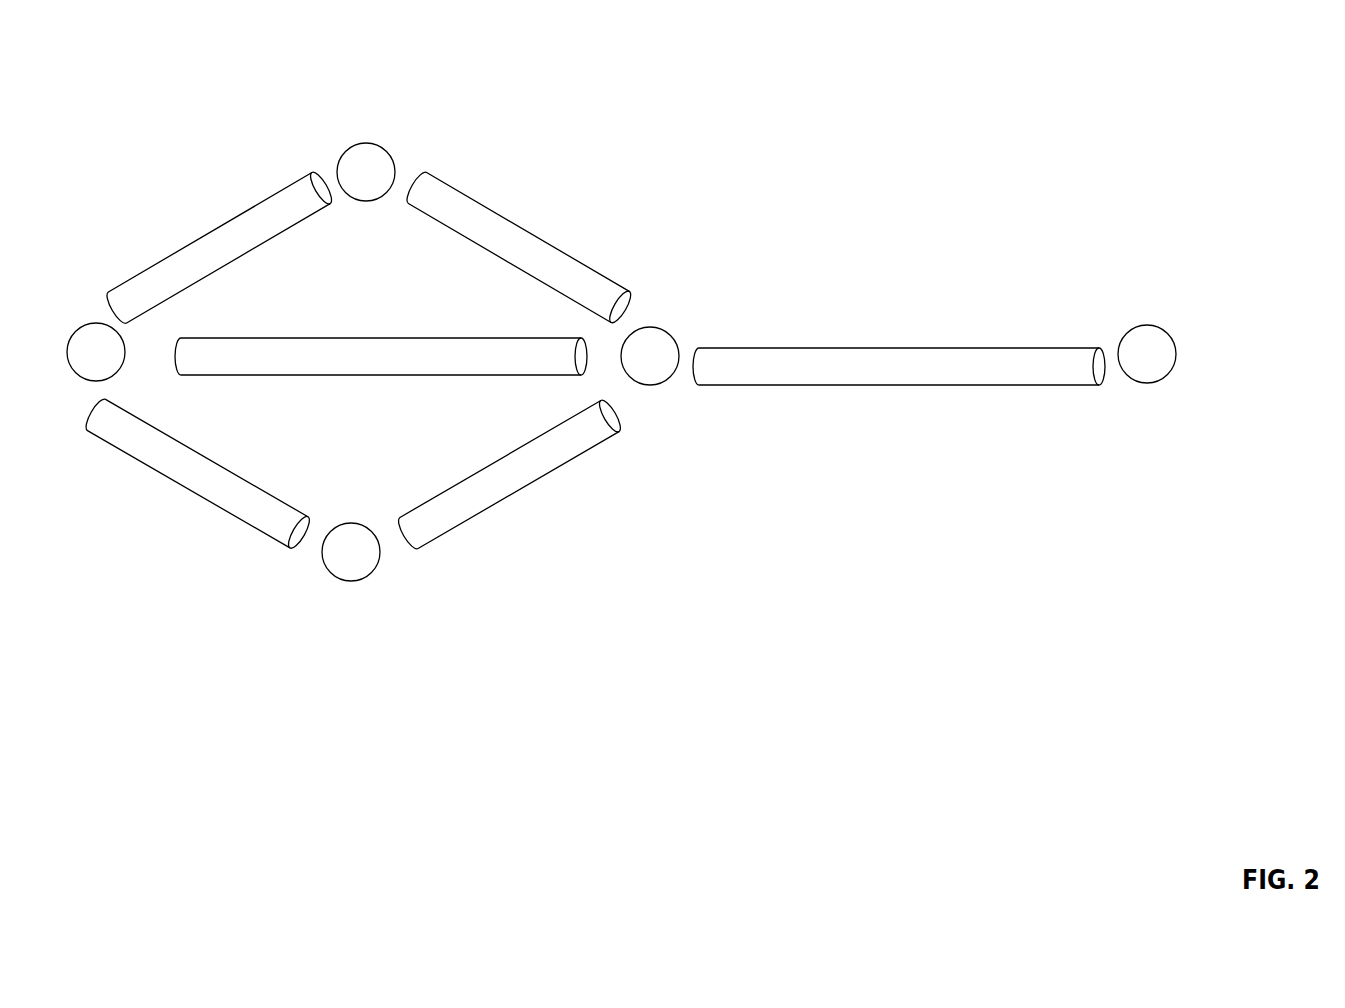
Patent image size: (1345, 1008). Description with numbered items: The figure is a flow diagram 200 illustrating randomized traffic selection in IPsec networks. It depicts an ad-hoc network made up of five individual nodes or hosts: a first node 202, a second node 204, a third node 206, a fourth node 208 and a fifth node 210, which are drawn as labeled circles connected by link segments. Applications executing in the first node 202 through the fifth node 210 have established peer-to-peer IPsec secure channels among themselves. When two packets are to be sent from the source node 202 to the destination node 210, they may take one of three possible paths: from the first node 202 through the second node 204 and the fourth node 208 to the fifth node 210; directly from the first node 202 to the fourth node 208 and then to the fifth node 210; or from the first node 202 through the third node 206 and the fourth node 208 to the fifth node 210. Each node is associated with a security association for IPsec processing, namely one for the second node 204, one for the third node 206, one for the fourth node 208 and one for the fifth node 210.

The flow diagram 200 is at (1213, 87).
The node P1 202 is at (81, 371).
The node P2 204 is at (351, 191).
The node P3 206 is at (336, 571).
The node P4 208 is at (635, 375).
The node P5 210 is at (1132, 373).